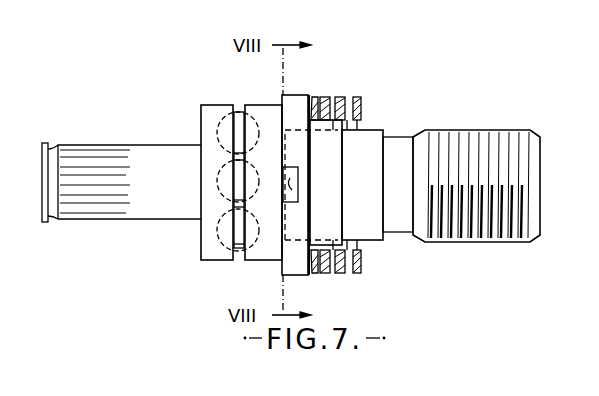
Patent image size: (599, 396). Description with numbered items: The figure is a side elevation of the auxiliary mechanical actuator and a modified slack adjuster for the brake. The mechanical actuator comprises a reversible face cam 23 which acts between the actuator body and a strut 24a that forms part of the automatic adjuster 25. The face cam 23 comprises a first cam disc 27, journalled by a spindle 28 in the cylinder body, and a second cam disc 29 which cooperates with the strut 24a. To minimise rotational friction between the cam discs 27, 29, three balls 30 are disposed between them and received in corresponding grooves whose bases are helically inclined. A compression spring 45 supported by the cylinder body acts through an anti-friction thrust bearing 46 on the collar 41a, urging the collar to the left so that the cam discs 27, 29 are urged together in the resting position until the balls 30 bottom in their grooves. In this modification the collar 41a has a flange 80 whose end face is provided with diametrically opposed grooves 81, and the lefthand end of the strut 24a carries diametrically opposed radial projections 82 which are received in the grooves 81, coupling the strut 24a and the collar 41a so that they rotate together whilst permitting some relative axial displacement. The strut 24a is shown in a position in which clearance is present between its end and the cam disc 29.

The spindle 28 is at (147, 160).
The first cam disc 27 is at (215, 105).
The balls 30 is at (238, 110).
The second cam disc 29 is at (261, 105).
The reversible face cam 23 is at (215, 182).
The flange 80 is at (296, 258).
The grooves 81 is at (298, 175).
The radial projections 82 is at (290, 190).
The collar 41a is at (337, 215).
The anti-friction thrust bearing 46 is at (313, 98).
The compression spring 45 is at (358, 100).
The automatic adjuster 25 is at (357, 154).
The strut 24a is at (372, 135).